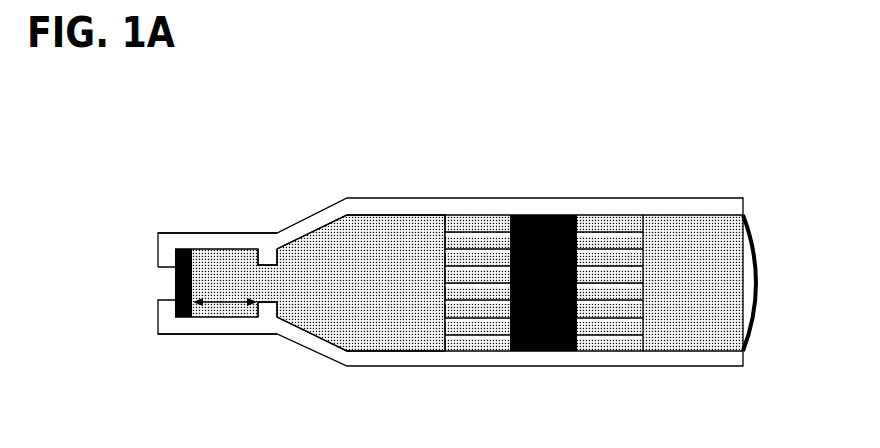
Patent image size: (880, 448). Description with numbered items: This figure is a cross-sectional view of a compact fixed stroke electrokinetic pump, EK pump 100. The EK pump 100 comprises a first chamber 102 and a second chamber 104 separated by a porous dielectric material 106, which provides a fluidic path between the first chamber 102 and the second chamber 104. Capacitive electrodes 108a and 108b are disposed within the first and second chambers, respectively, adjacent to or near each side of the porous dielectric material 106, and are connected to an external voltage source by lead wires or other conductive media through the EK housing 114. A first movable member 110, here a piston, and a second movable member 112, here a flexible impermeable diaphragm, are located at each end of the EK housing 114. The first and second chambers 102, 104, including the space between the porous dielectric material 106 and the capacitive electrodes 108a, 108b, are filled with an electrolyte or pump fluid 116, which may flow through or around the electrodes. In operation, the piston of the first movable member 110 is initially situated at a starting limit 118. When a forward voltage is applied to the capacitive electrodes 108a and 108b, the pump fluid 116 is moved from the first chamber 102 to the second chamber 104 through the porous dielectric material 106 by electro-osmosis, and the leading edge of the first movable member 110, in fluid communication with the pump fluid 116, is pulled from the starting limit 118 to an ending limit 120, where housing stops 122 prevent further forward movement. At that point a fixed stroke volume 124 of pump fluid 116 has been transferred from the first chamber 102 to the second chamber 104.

The EK pump 100 is at (752, 92).
The first chamber 102 is at (393, 237).
The second chamber 104 is at (692, 235).
The porous dielectric material 106 is at (542, 216).
The capacitive electrode 108a is at (472, 337).
The capacitive electrode 108b is at (610, 333).
The first movable member 110 is at (193, 250).
The second movable member 112 is at (760, 278).
The EK housing 114 is at (705, 353).
The pump fluid 116 is at (732, 253).
The starting limit 118 is at (202, 318).
The ending limit 120 is at (258, 317).
The housing stops 122 is at (252, 257).
The fixed stroke volume 124 is at (230, 269).